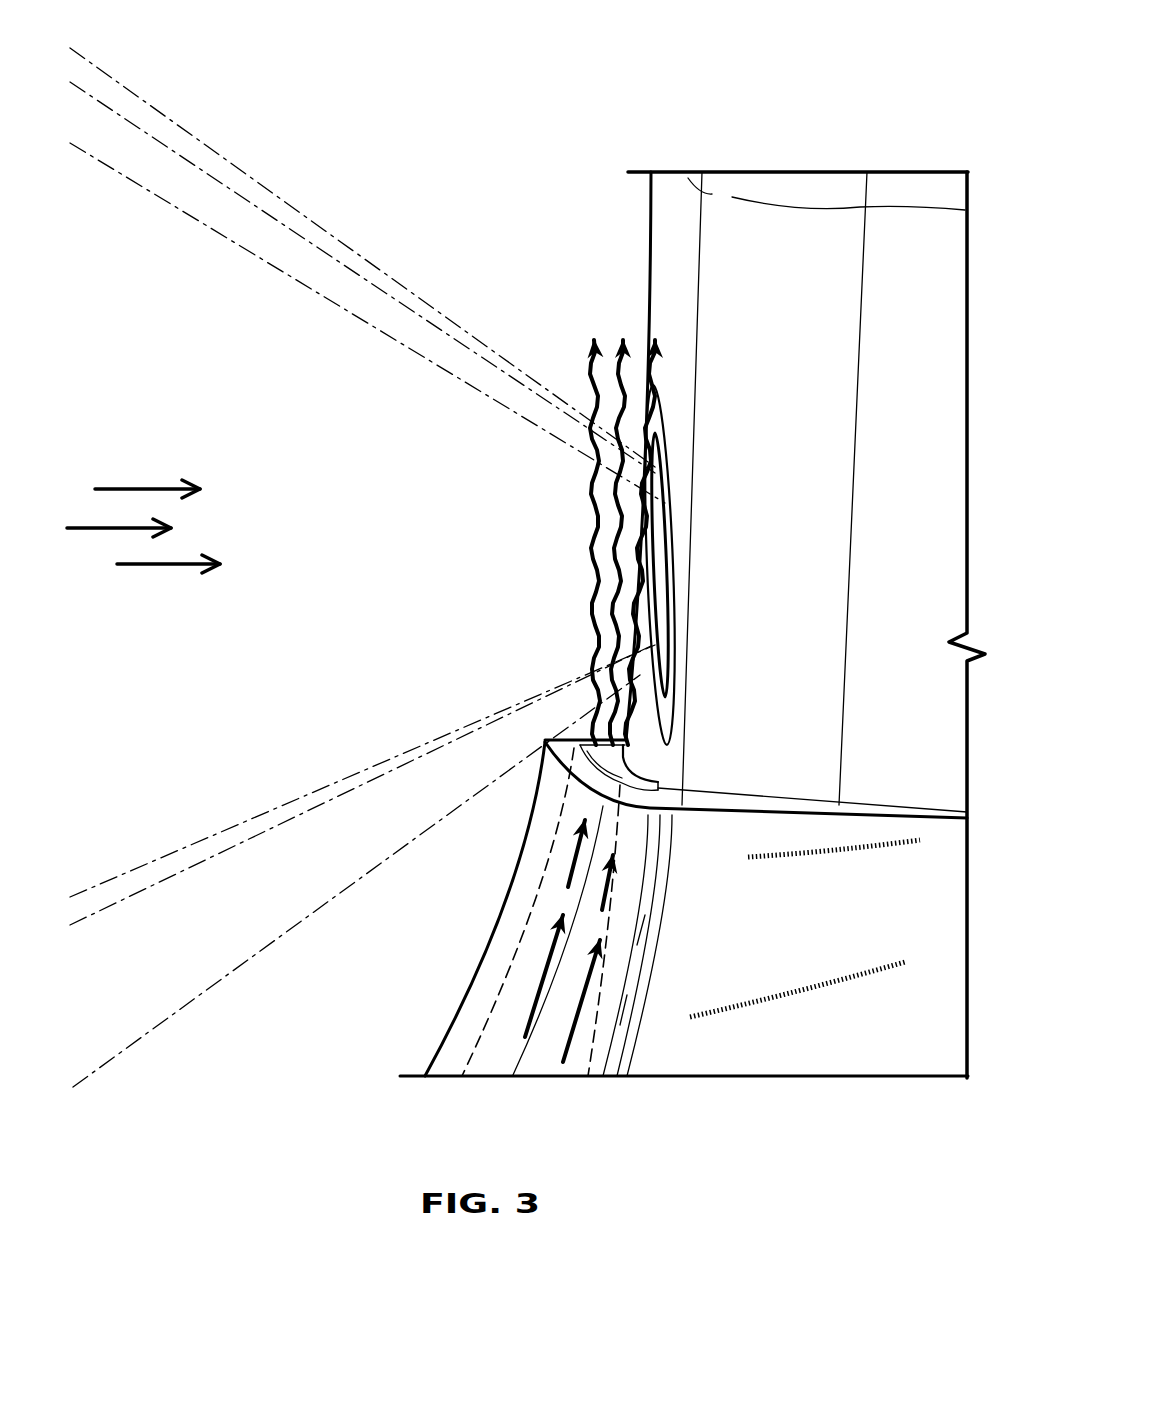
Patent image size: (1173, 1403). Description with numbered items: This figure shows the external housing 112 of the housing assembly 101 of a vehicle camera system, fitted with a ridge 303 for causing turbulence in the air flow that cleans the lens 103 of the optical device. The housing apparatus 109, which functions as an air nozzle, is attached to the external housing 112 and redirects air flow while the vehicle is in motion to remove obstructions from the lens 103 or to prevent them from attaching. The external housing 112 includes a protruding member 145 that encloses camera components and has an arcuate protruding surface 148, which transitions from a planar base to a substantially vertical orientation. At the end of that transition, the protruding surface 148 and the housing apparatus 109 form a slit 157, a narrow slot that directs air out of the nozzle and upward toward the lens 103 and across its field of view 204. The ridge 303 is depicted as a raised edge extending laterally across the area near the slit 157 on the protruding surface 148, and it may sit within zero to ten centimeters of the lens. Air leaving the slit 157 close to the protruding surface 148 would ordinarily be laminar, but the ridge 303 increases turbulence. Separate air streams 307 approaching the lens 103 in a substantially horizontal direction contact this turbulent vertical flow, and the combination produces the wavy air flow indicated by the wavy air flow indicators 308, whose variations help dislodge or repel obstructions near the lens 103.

The housing assembly 101 is at (367, 567).
The field of view 204 is at (290, 208).
The external housing 112 is at (805, 547).
The protruding member 145 is at (780, 180).
The lens 103 is at (688, 546).
The wavy air flow indicators 308 is at (605, 568).
The horizontal air flow streams 307 is at (135, 566).
The ridge 303 is at (647, 778).
The slit 157 is at (668, 788).
The housing apparatus 109 is at (647, 845).
The protruding surface 148 is at (478, 1037).